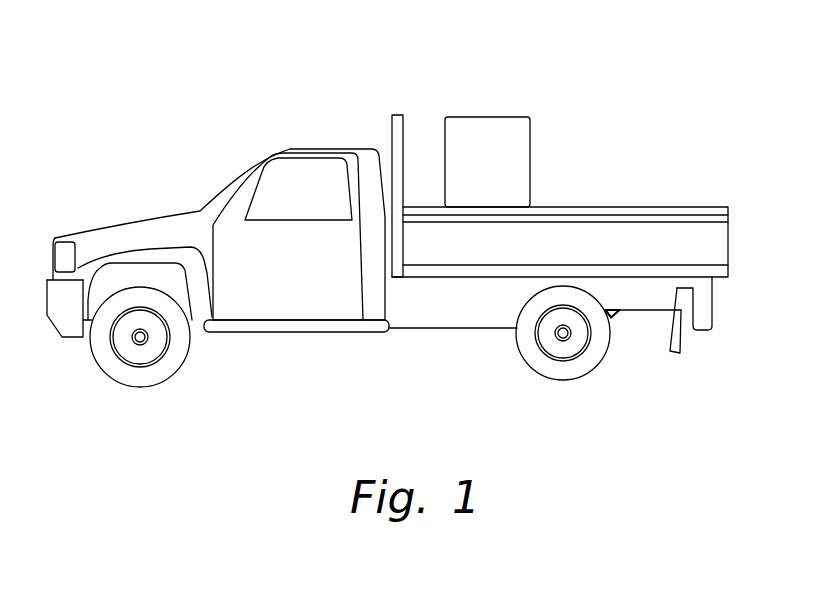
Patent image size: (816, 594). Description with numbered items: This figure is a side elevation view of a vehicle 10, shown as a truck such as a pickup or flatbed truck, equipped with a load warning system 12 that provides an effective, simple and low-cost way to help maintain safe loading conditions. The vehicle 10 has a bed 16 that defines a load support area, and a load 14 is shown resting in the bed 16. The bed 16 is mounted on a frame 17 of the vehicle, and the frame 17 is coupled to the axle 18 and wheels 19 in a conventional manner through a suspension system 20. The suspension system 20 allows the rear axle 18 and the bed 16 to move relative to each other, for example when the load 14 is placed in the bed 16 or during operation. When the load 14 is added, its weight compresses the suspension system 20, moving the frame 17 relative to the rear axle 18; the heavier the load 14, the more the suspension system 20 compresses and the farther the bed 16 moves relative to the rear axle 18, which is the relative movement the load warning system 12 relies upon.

The vehicle 10 is at (361, 109).
The load warning system 12 is at (608, 301).
The load 14 is at (497, 117).
The bed 16 is at (588, 205).
The frame 17 is at (658, 313).
The axle 18 is at (562, 338).
The wheels 19 is at (535, 370).
The suspension system 20 is at (618, 334).